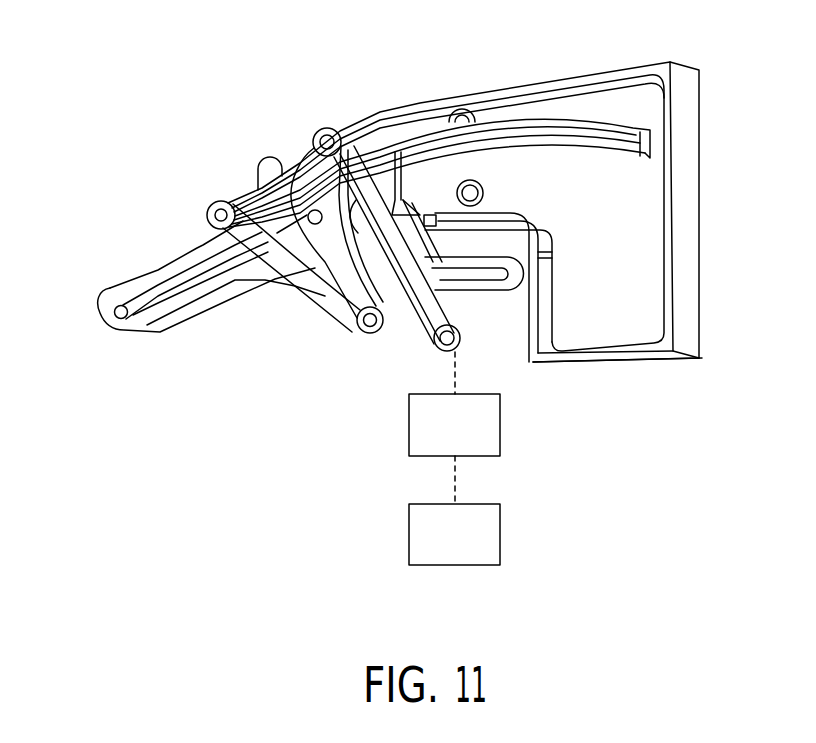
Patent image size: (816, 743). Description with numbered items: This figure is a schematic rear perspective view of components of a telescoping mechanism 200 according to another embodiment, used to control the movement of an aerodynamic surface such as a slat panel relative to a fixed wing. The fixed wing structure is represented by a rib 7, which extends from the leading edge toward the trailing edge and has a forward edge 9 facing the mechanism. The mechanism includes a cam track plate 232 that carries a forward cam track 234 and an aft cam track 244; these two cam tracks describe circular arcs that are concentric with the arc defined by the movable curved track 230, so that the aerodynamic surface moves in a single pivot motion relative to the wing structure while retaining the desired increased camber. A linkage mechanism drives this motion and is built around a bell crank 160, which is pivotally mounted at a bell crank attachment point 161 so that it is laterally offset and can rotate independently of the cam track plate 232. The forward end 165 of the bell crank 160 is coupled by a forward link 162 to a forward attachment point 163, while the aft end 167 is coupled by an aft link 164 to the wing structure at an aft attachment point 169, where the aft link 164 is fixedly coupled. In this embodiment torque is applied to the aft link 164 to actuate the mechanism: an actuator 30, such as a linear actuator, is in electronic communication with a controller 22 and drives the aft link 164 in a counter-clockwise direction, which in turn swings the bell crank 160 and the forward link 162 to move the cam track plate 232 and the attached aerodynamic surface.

The rib 7 is at (608, 103).
The forward edge 9 is at (538, 305).
The controller 22 is at (500, 532).
The actuator 30 is at (500, 426).
The bell crank 160 is at (313, 165).
The bell crank attachment point 161 is at (306, 171).
The forward link 162 is at (308, 272).
The forward attachment point 163 is at (213, 201).
The aft link 164 is at (400, 283).
The forward end 165 is at (367, 330).
The aft end 167 is at (332, 128).
The aft attachment point 169 is at (456, 341).
The telescoping mechanism 200 is at (96, 144).
The movable curved track 230 is at (440, 141).
The cam track plate 232 is at (211, 263).
The forward cam track 234 is at (138, 288).
The aft cam track 244 is at (490, 279).